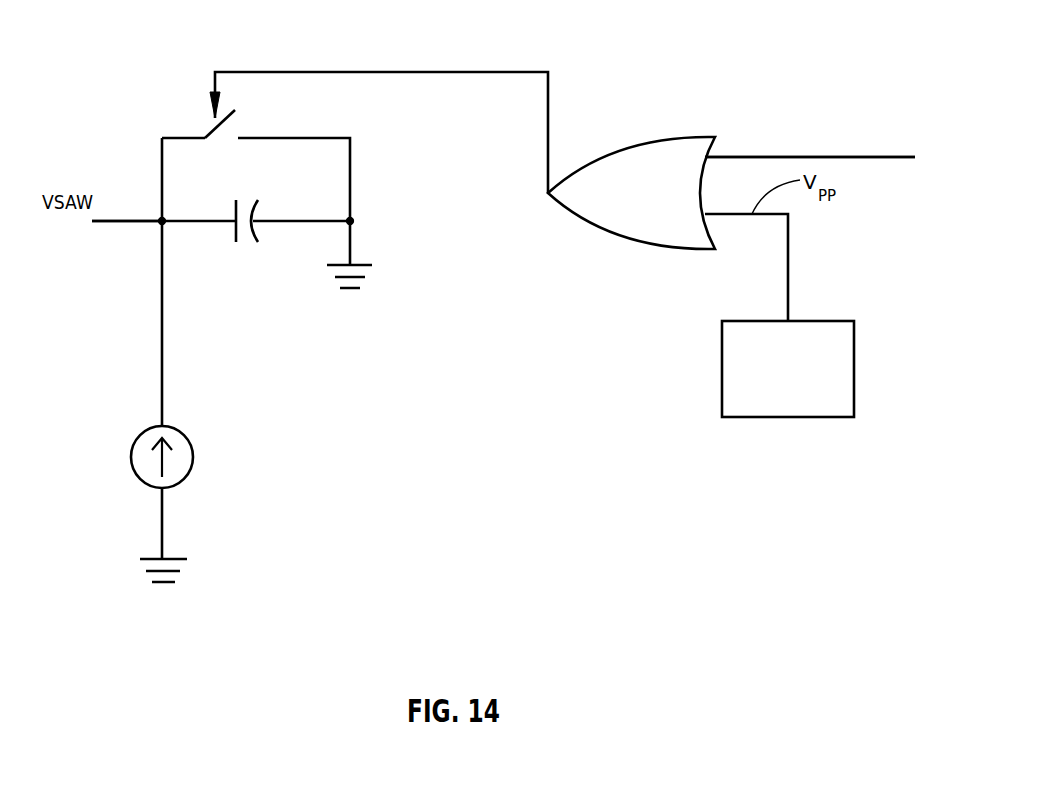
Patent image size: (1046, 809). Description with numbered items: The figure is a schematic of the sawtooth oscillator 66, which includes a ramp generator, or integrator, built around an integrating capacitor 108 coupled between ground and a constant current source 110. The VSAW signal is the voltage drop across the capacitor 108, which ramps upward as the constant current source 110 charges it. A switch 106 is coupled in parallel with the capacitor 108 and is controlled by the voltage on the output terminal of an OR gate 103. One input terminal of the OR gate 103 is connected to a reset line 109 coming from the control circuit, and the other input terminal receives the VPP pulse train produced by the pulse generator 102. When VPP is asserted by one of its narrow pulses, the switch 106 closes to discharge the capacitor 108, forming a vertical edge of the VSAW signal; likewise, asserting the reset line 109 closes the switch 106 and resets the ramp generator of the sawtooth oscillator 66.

The sawtooth oscillator 66 is at (325, 603).
The pulse generator 102 is at (817, 321).
The OR gate 103 is at (638, 140).
The switch 106 is at (202, 115).
The integrating capacitor 108 is at (253, 227).
The reset line 109 is at (842, 157).
The constant current source 110 is at (147, 428).